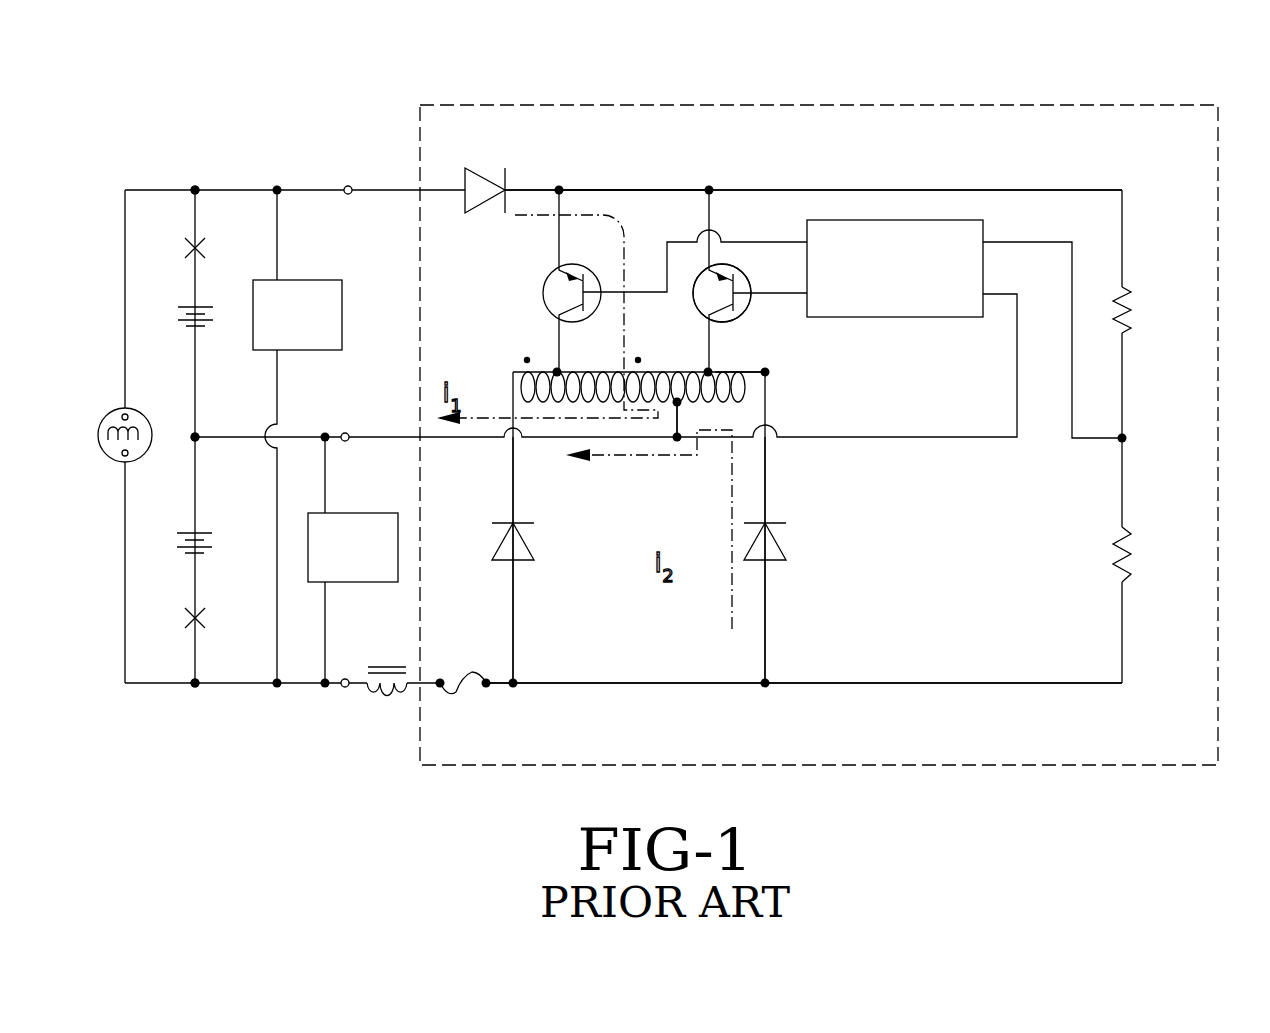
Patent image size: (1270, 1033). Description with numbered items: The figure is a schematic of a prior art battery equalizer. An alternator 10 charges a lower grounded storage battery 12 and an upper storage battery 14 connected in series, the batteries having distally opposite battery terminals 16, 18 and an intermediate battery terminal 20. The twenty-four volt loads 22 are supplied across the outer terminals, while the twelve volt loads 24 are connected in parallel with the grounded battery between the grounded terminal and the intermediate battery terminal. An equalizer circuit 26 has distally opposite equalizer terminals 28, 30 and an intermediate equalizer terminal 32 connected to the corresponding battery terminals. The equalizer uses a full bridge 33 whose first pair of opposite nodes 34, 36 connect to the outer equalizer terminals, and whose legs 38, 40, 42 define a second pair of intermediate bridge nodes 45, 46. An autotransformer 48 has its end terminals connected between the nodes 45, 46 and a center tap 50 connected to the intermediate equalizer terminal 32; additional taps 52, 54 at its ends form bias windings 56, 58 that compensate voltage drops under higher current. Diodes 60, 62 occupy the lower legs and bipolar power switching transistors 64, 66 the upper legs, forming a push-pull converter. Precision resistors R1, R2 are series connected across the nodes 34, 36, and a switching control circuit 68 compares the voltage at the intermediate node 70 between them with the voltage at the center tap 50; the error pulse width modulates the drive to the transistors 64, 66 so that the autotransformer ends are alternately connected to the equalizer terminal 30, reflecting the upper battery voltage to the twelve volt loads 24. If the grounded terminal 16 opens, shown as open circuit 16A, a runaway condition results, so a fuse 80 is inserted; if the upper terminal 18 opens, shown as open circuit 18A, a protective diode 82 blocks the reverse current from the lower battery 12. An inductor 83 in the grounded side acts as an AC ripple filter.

The alternator 10 is at (112, 462).
The lower grounded storage battery 12 is at (177, 551).
The upper storage battery 14 is at (178, 305).
The distal grounded battery terminal 16 is at (195, 686).
The open circuit 16A is at (214, 650).
The upper battery terminal 18 is at (195, 186).
The open circuit 18A is at (214, 226).
The intermediate battery terminal 20 is at (192, 437).
The 24 volt loads 22 is at (328, 279).
The 12 volt loads 24 is at (368, 512).
The equalizer circuit 26 is at (890, 104).
The equalizer terminal 28 is at (345, 687).
The 24 volt equalizer terminal 30 is at (348, 186).
The intermediate equalizer terminal 32 is at (345, 433).
The full bridge 33 is at (722, 143).
The bridge node 34 is at (668, 686).
The bridge node 36 is at (598, 188).
The bridge leg 38 is at (808, 572).
The bridge leg 40 is at (552, 572).
The bridge leg 42 is at (768, 322).
The intermediate bridge node 45 is at (767, 374).
The intermediate bridge node 46 is at (513, 370).
The autotransformer 48 is at (708, 380).
The center tap 50 is at (675, 405).
The tap 52 is at (708, 370).
The tap 54 is at (557, 370).
The bias winding 56 is at (720, 400).
The bias winding 58 is at (535, 403).
The diode 60 is at (528, 548).
The diode 62 is at (790, 545).
The power switching transistor 64 is at (730, 263).
The power switching transistor 66 is at (550, 274).
The switching control circuit 68 is at (933, 220).
The intermediate node 70 is at (1122, 440).
The fuse 80 is at (455, 693).
The protective diode 82 is at (482, 178).
The inductor 83 is at (385, 705).
The precision resistor R1 is at (1146, 310).
The precision resistor R2 is at (1146, 554).